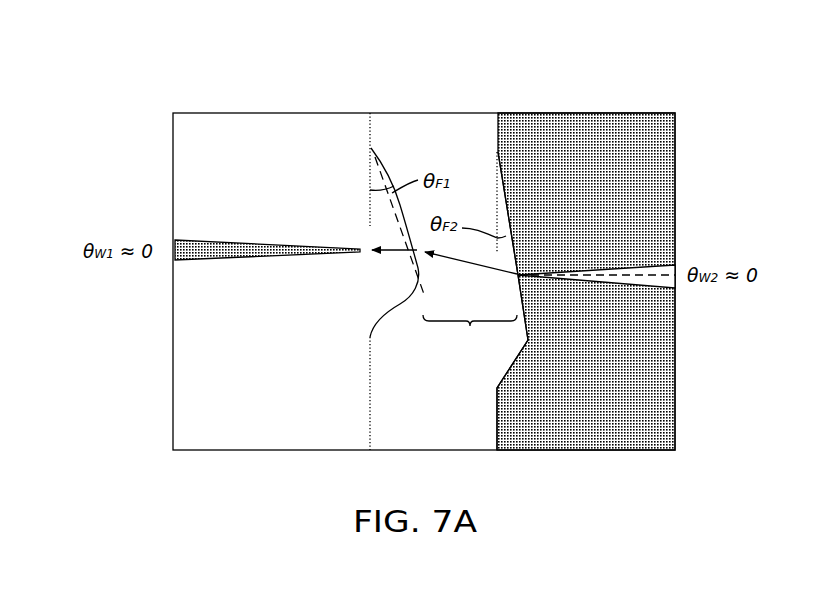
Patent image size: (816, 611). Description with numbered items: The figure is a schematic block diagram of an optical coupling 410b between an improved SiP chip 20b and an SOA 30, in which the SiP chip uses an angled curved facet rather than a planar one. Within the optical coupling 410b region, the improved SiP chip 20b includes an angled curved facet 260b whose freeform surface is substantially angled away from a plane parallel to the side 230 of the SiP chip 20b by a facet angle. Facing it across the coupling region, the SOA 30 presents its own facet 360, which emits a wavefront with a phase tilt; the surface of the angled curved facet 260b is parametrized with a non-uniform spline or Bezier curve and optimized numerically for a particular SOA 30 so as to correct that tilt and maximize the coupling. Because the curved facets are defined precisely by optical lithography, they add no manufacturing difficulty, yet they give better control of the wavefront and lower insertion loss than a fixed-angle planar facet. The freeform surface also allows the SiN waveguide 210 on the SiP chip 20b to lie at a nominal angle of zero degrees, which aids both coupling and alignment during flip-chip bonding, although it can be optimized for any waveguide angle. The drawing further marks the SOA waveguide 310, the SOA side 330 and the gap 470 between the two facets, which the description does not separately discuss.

The optical coupling 410b is at (160, 49).
The improved SiP chip 20b is at (283, 131).
The SOA 30 is at (563, 131).
The SiN waveguide 210 is at (178, 238).
The side of the SiP chip 230 is at (369, 419).
The angled curved facet 260b is at (412, 262).
The second waveguide core 310 is at (658, 263).
The second waveguide facet 330 is at (497, 432).
The facet of the SOA 360 is at (518, 263).
The gap 470 is at (470, 335).